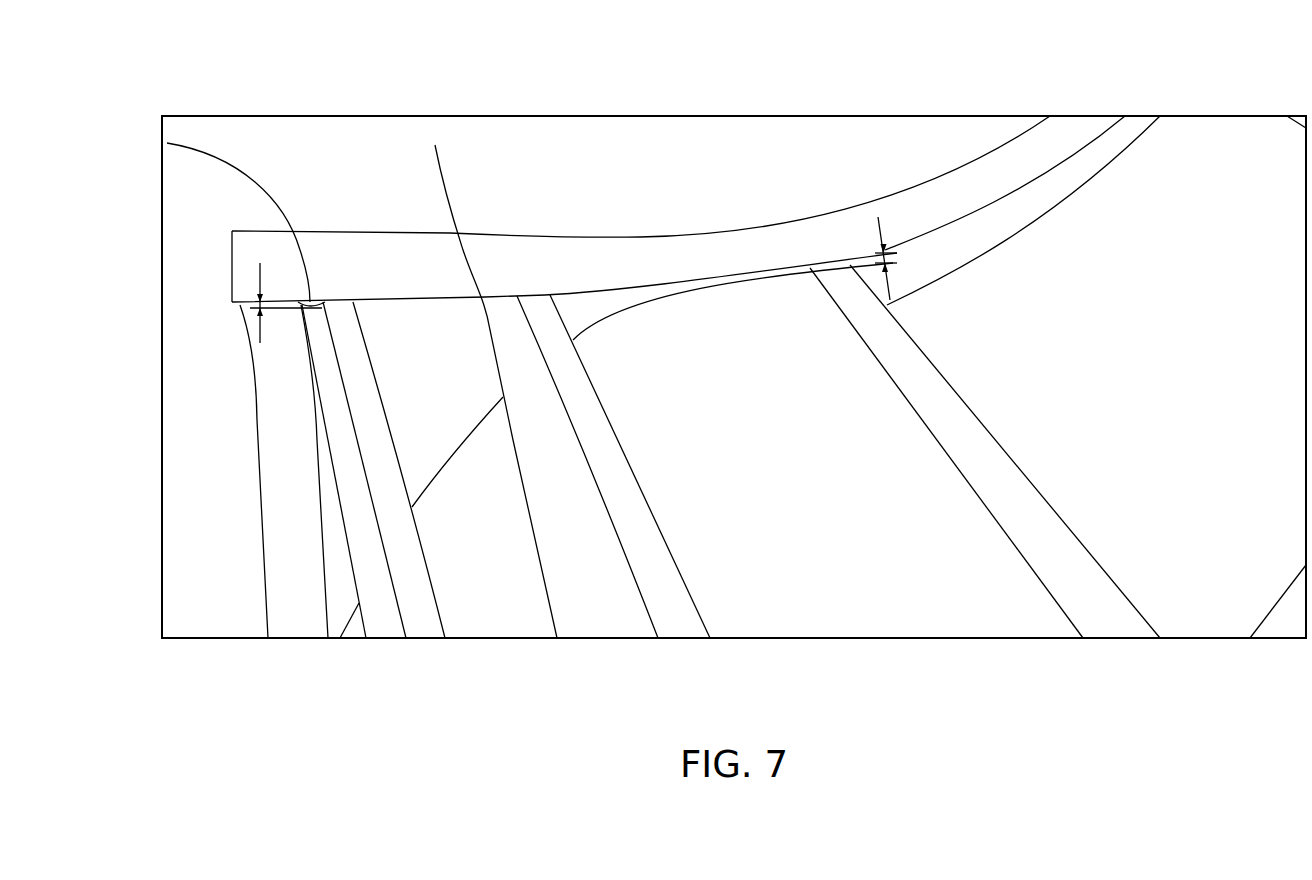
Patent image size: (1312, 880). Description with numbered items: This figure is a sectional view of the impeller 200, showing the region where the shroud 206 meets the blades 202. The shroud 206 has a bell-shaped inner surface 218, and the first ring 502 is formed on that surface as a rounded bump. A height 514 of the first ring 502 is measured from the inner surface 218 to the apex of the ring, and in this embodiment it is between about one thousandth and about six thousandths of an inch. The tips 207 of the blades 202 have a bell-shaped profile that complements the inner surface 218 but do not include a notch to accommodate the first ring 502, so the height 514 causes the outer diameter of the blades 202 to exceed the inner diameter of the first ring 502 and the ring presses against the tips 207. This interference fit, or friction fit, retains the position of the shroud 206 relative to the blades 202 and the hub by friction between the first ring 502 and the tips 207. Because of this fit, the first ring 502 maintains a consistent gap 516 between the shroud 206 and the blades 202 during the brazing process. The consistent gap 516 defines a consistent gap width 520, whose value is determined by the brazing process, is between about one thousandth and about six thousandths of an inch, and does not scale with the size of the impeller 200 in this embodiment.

The impeller 200 is at (230, 95).
The blades 202 is at (367, 459).
The shroud 206 is at (285, 253).
The tips of the blades 207 is at (788, 267).
The inner surface 218 is at (435, 145).
The first ring 502 is at (167, 143).
The height 514 is at (249, 273).
The consistent gap 516 is at (819, 250).
The consistent gap width 520 is at (880, 220).